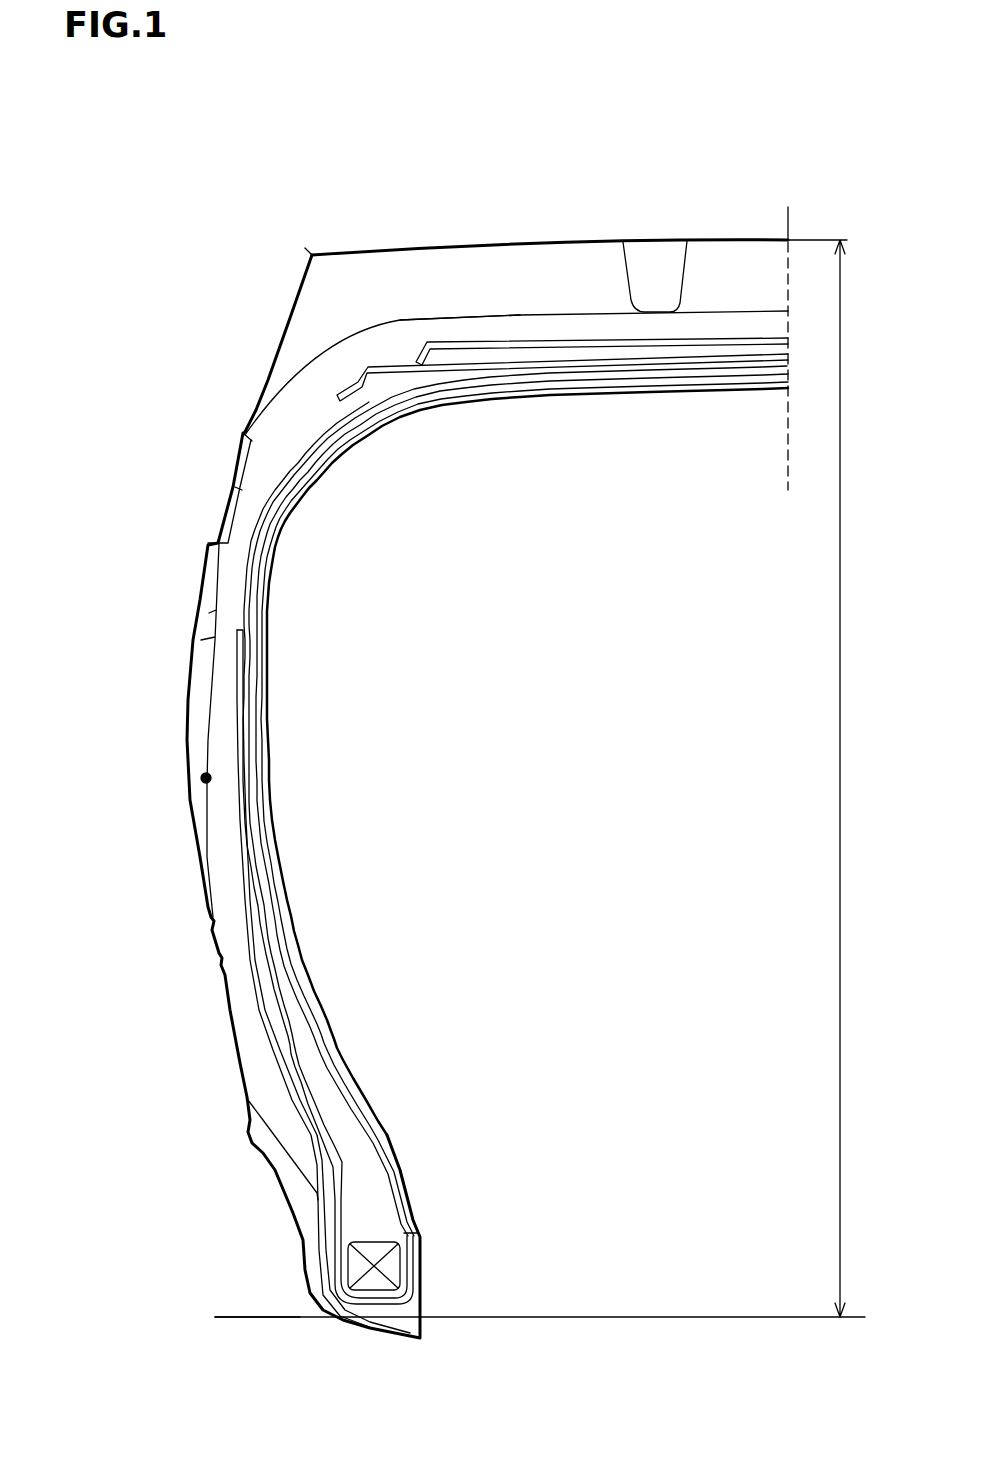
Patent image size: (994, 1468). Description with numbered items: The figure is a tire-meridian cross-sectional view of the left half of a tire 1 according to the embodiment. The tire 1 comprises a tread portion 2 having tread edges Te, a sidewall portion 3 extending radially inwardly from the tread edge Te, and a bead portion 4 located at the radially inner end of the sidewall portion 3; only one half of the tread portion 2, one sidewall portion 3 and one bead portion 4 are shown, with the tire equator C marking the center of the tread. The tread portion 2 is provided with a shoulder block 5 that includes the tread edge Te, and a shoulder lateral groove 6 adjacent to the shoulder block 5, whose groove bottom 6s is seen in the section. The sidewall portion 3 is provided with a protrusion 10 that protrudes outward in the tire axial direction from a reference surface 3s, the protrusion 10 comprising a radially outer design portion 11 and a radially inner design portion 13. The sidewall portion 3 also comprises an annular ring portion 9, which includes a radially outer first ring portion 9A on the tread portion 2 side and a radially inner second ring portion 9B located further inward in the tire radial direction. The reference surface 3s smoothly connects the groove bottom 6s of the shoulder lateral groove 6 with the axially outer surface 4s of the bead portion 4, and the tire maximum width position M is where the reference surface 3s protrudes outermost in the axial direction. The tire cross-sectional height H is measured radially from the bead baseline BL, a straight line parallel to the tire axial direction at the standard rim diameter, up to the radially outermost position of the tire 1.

The tire 1 is at (850, 142).
The tread portion 2 is at (800, 144).
The sidewall portion 3 is at (131, 581).
The reference surface 3s is at (200, 857).
The bead portion 4 is at (252, 1198).
The axially outer surface of the bead portion 4s is at (222, 1010).
The shoulder block 5 is at (415, 245).
The shoulder lateral groove 6 is at (520, 267).
The groove bottom 6s is at (581, 312).
The ring portion 9 is at (240, 430).
The radially outer first ring portion 9A is at (284, 419).
The radially inner second ring portion 9B is at (215, 927).
The protrusion 10 is at (128, 693).
The radially outer design portion 11 is at (233, 466).
The radially inner design portion 13 is at (183, 728).
The tire maximum width position M is at (203, 779).
The tread edge Te is at (311, 254).
The tire equator C is at (787, 332).
The tire cross-sectional height H is at (541, 778).
The bead baseline BL is at (245, 1317).